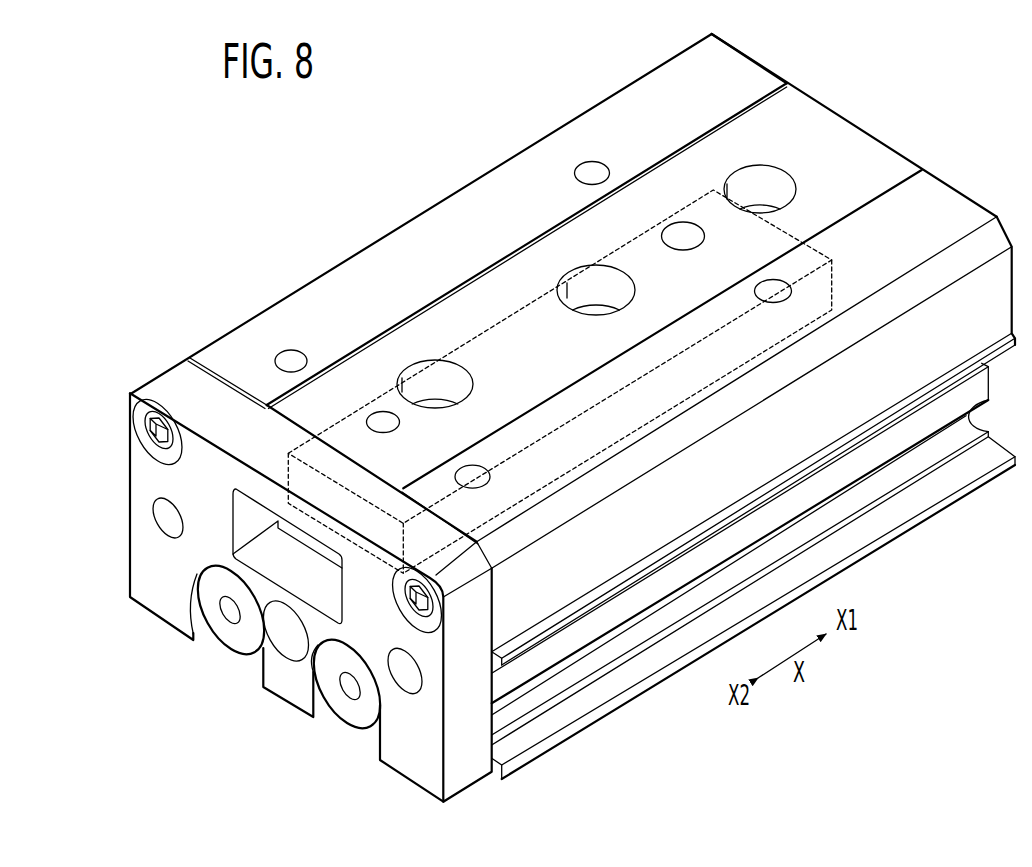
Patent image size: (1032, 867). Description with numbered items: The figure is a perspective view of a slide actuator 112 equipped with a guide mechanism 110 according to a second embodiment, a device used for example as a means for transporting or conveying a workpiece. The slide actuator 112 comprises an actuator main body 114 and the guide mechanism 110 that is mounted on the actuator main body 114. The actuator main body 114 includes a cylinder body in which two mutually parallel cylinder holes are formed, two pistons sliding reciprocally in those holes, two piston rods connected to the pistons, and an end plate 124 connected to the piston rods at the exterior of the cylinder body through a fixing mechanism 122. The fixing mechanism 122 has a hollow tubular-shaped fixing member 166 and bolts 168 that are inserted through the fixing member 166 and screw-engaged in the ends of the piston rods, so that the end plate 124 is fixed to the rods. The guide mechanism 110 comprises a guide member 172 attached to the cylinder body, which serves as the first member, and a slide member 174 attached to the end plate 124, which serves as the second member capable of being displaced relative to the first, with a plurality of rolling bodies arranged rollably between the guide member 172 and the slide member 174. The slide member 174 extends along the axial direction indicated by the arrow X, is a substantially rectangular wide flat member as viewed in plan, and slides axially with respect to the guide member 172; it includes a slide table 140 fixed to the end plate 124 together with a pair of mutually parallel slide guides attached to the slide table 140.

The guide mechanism 110 is at (768, 67).
The slide actuator 112 is at (340, 144).
The actuator main body 114 is at (154, 376).
The fixing mechanism 122 is at (242, 650).
The end plate 124 is at (145, 475).
The slide table 140 is at (545, 156).
The fixing member 166 is at (213, 617).
The bolts 168 is at (231, 614).
The guide member 172 is at (693, 202).
The slide member 174 is at (447, 195).